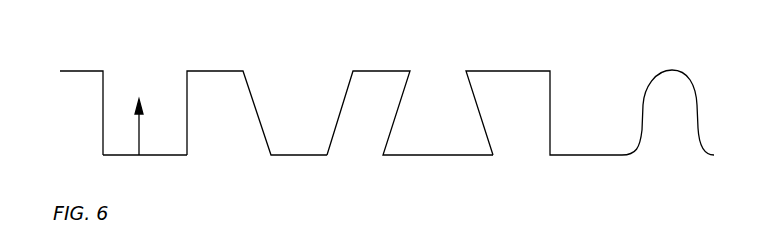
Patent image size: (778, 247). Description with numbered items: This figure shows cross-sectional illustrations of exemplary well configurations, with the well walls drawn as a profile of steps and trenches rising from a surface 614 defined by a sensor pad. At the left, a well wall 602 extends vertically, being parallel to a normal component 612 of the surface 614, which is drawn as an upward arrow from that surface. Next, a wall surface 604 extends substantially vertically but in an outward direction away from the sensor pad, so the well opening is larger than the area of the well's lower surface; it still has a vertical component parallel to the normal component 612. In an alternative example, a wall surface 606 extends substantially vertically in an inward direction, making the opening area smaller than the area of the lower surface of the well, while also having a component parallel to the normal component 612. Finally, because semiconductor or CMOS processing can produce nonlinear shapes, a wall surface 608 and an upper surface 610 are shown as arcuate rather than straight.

The well wall 602 is at (103, 100).
The wall surface 604 is at (262, 130).
The wall surface 606 is at (392, 130).
The wall surface 608 is at (642, 117).
The upper surface 610 is at (674, 70).
The normal component 612 is at (139, 139).
The surface 614 is at (167, 156).